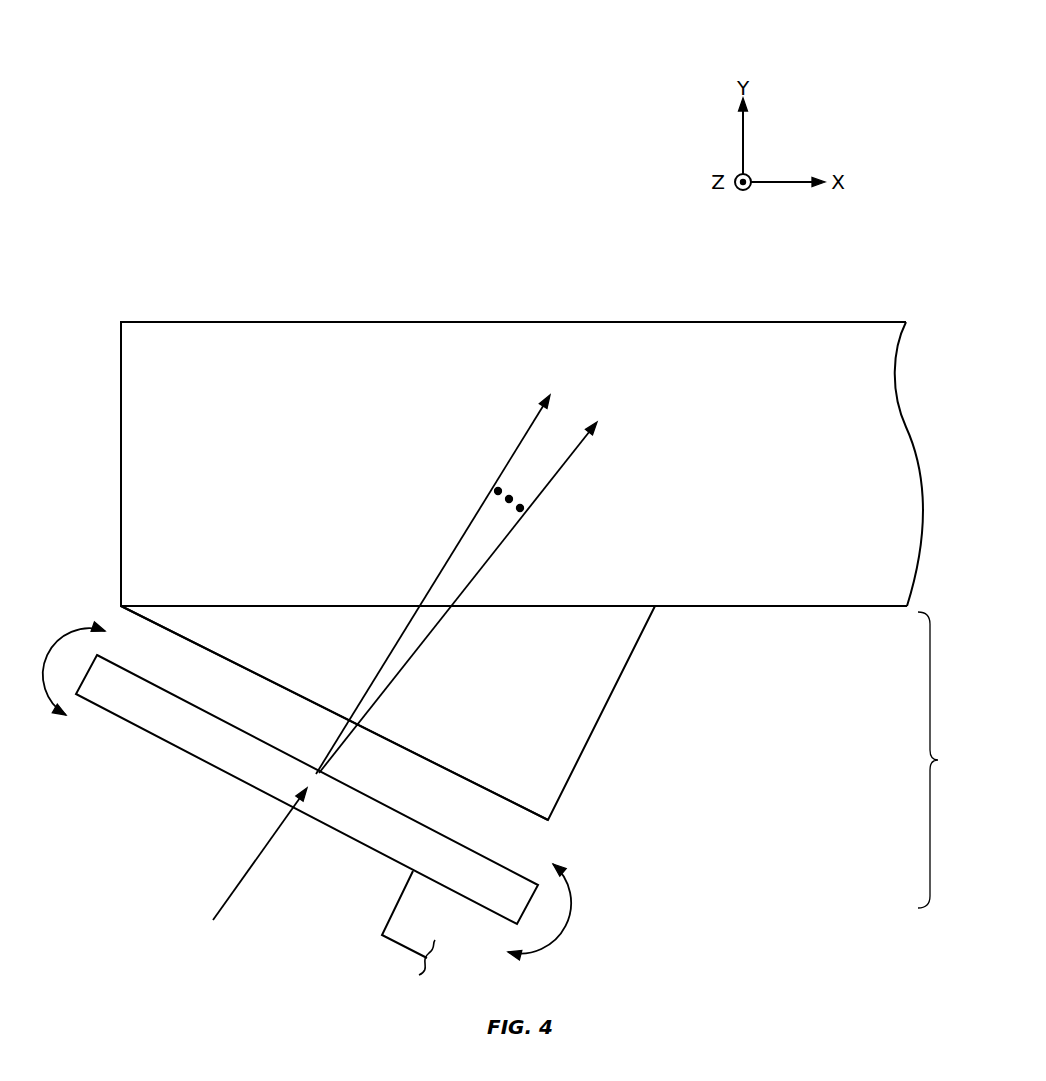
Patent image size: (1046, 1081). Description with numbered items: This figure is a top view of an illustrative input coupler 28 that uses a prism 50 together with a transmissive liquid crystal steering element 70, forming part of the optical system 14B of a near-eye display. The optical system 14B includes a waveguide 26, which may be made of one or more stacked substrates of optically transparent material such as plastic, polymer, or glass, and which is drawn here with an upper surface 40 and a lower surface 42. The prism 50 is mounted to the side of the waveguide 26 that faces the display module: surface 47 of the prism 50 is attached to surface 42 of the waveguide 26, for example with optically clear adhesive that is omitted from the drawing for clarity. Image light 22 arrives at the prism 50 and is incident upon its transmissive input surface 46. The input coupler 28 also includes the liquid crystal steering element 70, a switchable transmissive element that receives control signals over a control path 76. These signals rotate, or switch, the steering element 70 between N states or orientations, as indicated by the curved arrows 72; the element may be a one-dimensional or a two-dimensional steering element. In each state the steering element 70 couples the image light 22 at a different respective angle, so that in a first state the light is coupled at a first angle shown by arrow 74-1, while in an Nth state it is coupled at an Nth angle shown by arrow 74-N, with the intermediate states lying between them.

The optical system 14B is at (541, 64).
The image light 22 is at (252, 862).
The waveguide 26 is at (835, 326).
The input coupler 28 is at (941, 760).
The surface 40 is at (749, 313).
The surface 42 is at (706, 598).
The transmissive input surface 46 is at (468, 766).
The surface 47 is at (539, 616).
The prism 50 is at (603, 710).
The transmissive liquid crystal steering element 70 is at (478, 855).
The arrows 72 is at (76, 629).
The arrow 74-1 is at (451, 553).
The arrow 74-N is at (493, 553).
The control path 76 is at (388, 941).